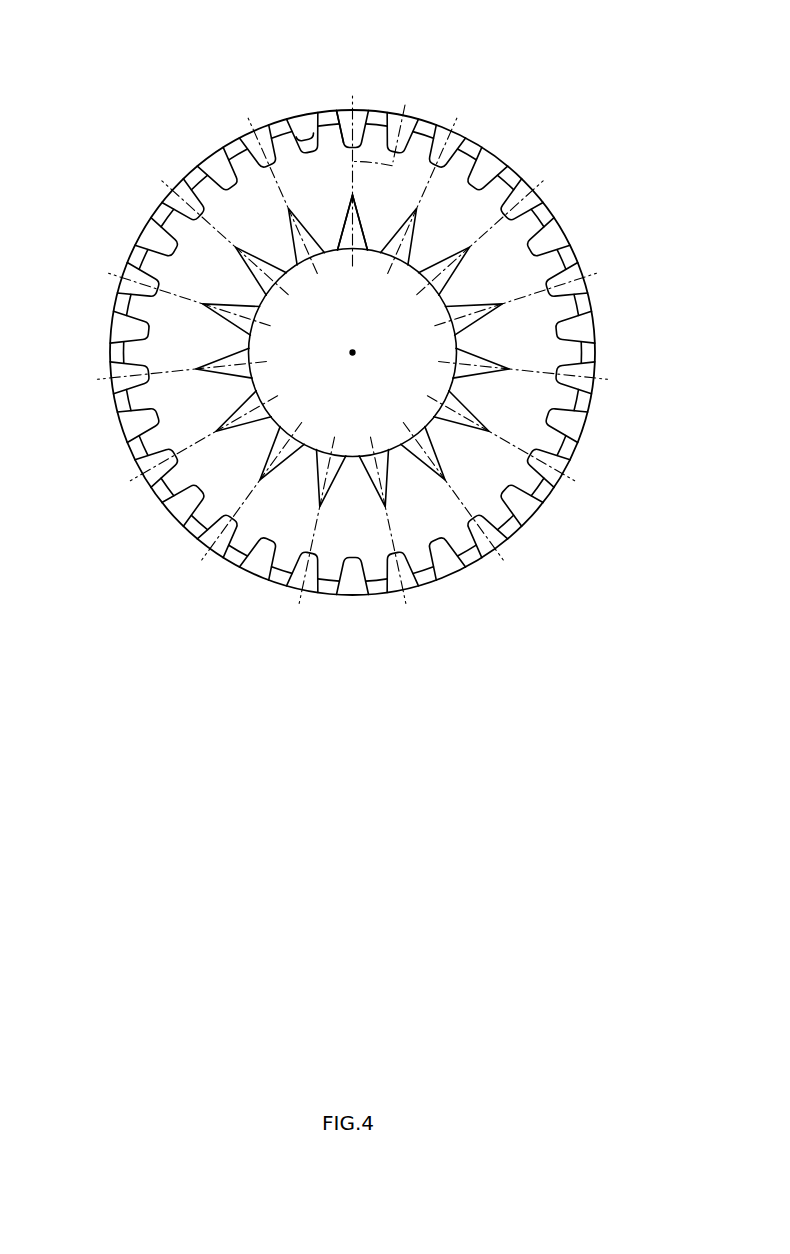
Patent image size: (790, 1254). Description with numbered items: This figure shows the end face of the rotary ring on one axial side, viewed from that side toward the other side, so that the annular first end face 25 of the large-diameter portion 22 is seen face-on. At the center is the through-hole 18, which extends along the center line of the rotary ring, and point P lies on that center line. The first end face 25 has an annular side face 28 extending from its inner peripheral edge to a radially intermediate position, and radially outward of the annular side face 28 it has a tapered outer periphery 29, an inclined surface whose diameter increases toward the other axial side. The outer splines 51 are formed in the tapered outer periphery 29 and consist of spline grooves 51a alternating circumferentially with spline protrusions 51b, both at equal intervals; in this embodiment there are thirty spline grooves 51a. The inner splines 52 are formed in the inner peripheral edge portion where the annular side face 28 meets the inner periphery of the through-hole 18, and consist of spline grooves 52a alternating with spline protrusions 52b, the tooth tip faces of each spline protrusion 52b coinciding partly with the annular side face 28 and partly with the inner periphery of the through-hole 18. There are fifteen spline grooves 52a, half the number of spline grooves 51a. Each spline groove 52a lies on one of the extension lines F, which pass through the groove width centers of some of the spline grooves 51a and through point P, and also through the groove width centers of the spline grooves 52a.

The through-hole 18 is at (309, 453).
The large-diameter portion 22 is at (508, 197).
The first end face 25 is at (587, 286).
The annular side face 28 is at (153, 410).
The tapered outer periphery 29 is at (110, 358).
The outer splines 51 is at (296, 117).
The spline grooves 51a is at (343, 130).
The spline protrusions 51b is at (307, 128).
The inner splines 52 is at (372, 241).
The spline grooves 52a is at (368, 250).
The spline protrusions 52b is at (326, 252).
The extension lines F is at (405, 105).
The point P is at (350, 353).